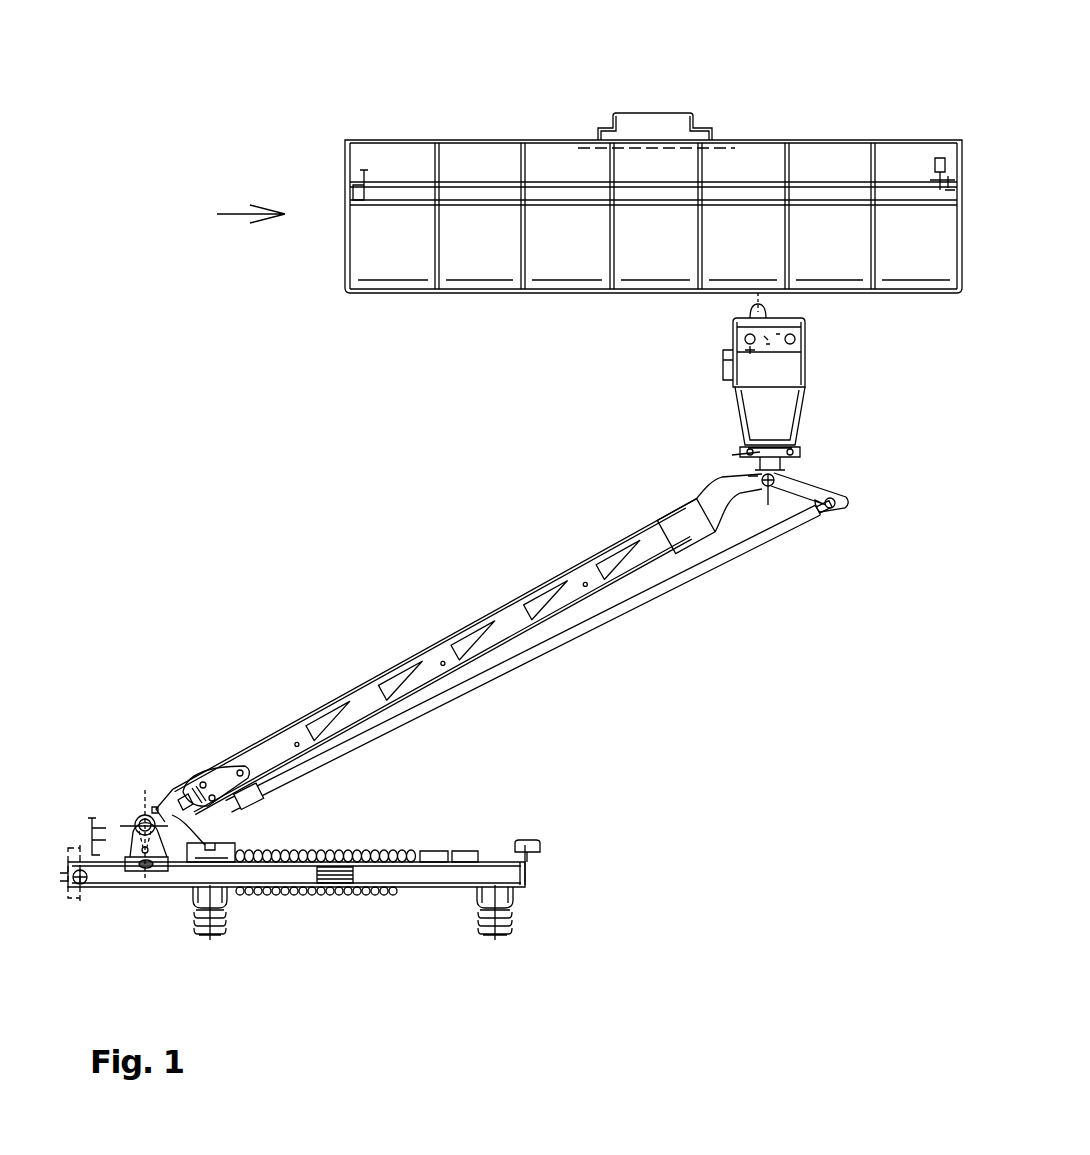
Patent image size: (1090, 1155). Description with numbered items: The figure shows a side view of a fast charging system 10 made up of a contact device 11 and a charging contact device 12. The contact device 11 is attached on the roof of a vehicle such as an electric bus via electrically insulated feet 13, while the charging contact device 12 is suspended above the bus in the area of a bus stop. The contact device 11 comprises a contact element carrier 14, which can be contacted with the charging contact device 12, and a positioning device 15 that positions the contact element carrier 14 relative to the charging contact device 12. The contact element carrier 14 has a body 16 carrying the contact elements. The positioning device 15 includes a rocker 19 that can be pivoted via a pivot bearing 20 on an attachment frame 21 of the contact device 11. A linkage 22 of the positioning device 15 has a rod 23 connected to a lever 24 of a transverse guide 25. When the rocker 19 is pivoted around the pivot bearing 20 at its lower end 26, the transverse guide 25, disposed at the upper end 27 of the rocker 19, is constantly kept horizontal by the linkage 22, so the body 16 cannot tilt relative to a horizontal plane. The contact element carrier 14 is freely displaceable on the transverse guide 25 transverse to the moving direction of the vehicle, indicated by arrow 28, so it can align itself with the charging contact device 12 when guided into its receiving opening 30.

The fast charging system 10 is at (172, 94).
The contact device 11 is at (348, 626).
The charging contact device 12 is at (497, 133).
The electrically insulated feet 13 is at (214, 938).
The contact element carrier 14 is at (668, 433).
The positioning device 15 is at (437, 631).
The body 16 is at (812, 378).
The rocker 19 is at (515, 605).
The pivot bearing 20 is at (144, 818).
The attachment frame 21 is at (480, 856).
The linkage 22 is at (690, 592).
The rod 23 is at (614, 624).
The lever 24 is at (824, 498).
The transverse guide 25 is at (808, 446).
The lower end 26 is at (162, 788).
The upper end 27 is at (712, 470).
The arrow 28 is at (243, 214).
The receiving opening 30 is at (478, 303).